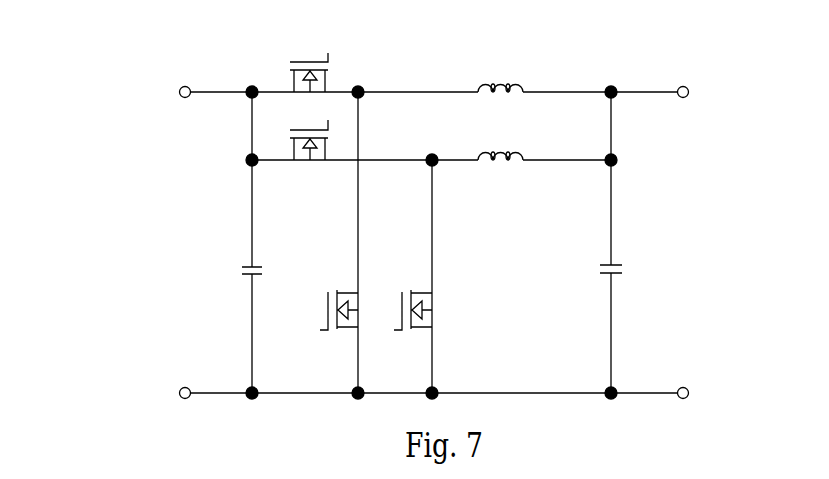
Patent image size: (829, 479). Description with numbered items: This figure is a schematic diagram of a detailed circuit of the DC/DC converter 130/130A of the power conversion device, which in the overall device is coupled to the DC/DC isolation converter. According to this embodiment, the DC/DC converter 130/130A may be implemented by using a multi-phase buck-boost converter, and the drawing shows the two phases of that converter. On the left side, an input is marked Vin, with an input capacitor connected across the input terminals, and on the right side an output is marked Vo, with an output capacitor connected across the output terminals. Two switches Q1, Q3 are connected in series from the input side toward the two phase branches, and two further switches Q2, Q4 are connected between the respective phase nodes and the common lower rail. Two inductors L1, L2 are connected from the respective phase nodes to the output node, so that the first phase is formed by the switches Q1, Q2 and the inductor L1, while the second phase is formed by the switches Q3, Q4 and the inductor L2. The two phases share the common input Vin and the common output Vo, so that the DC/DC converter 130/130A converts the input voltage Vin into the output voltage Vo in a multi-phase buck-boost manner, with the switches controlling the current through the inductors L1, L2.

The DC/DC converter 130 is at (158, 46).
The DC/DC converter 130A is at (434, 226).
The first switch (MOSFET) Q1 is at (309, 89).
The second switch (MOSFET) Q2 is at (338, 293).
The third switch (MOSFET) Q3 is at (309, 156).
The fourth switch (MOSFET) Q4 is at (413, 293).
The first inductor L1 is at (500, 106).
The second inductor L2 is at (500, 173).
The input voltage / input capacitor Vin is at (224, 244).
The output voltage / output capacitor Vo is at (643, 271).